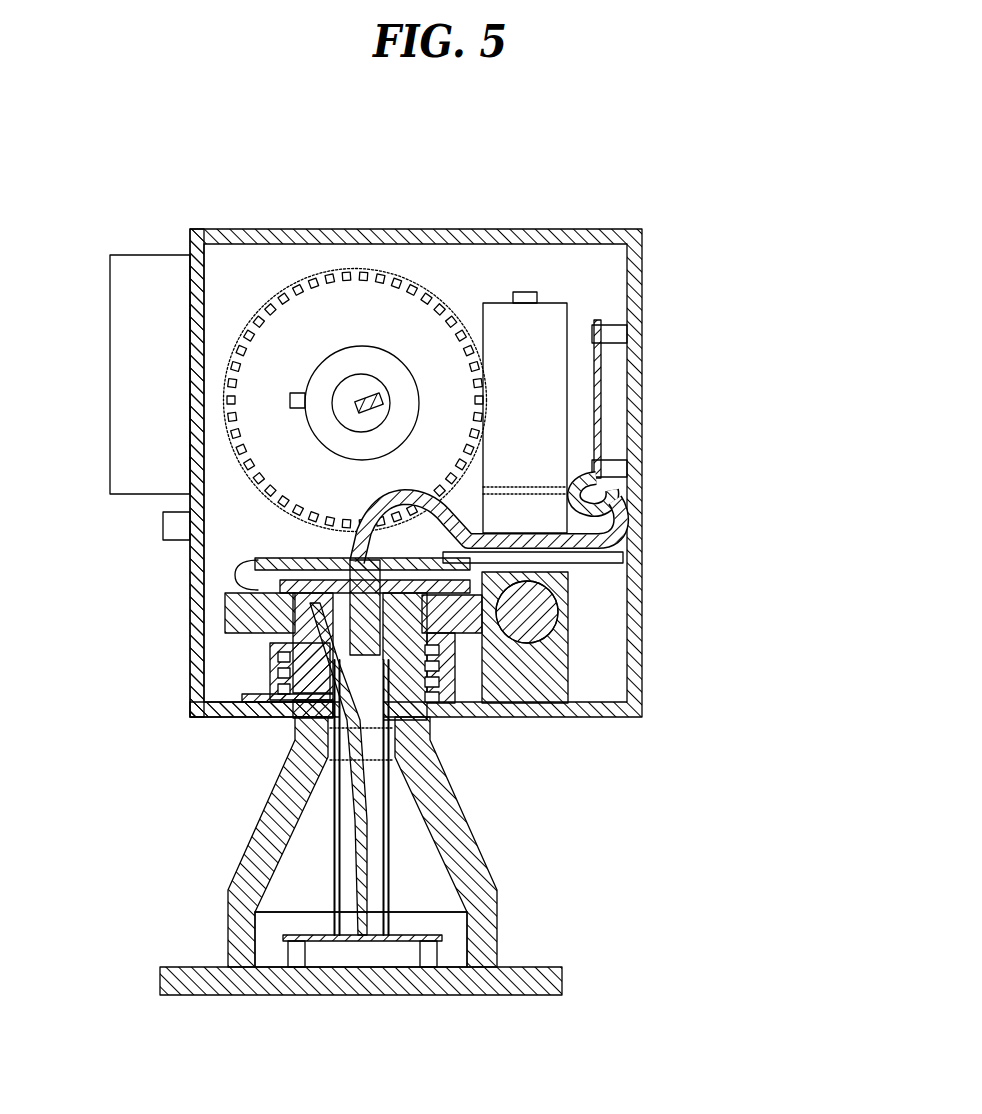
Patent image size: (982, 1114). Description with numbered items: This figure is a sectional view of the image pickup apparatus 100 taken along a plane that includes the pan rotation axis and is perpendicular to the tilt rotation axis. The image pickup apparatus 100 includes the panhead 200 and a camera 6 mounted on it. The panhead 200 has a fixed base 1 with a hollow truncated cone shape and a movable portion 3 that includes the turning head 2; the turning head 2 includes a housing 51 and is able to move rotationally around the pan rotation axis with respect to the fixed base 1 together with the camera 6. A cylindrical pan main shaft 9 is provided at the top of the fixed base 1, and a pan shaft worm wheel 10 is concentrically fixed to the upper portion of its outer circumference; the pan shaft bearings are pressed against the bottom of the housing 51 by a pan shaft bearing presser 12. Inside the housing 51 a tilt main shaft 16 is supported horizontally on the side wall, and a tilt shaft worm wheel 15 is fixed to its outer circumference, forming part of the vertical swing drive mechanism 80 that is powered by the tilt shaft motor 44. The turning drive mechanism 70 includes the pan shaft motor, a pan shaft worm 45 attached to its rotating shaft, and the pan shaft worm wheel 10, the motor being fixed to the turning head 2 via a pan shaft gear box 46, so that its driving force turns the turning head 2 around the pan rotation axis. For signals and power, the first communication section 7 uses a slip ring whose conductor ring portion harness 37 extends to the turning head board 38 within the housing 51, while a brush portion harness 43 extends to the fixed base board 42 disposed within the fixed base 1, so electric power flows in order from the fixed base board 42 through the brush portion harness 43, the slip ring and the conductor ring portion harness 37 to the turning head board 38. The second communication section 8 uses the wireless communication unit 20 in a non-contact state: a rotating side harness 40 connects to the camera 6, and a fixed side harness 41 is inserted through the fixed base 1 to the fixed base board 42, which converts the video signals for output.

The image pickup apparatus 100 is at (765, 167).
The panhead 200 is at (660, 265).
The camera 6 is at (118, 307).
The housing 51 is at (192, 440).
The turning head 2 is at (190, 500).
The movable portion 3 is at (98, 520).
The tilt shaft worm wheel 15 is at (448, 355).
The vertical swing drive mechanism 80 is at (507, 357).
The tilt main shaft 16 is at (390, 367).
The rotating side harness 40 is at (385, 398).
The tilt shaft motor 44 is at (540, 508).
The turning head board 38 is at (598, 392).
The conductor ring portion harness 37 is at (540, 551).
The pan shaft gear box 46 is at (540, 663).
The pan shaft worm 45 is at (540, 608).
The turning drive mechanism 70 is at (643, 620).
The wireless communication unit 20 is at (235, 573).
The pan shaft worm wheel 10 is at (468, 705).
The pan shaft bearing presser 12 is at (270, 676).
The second communication section 8 is at (268, 582).
The brush portion harness 43 is at (385, 845).
The pan main shaft 9 is at (318, 727).
The fixed side harness 41 is at (350, 706).
The fixed base 1 is at (252, 863).
The fixed base board 42 is at (290, 936).
The first communication section 7 is at (405, 900).